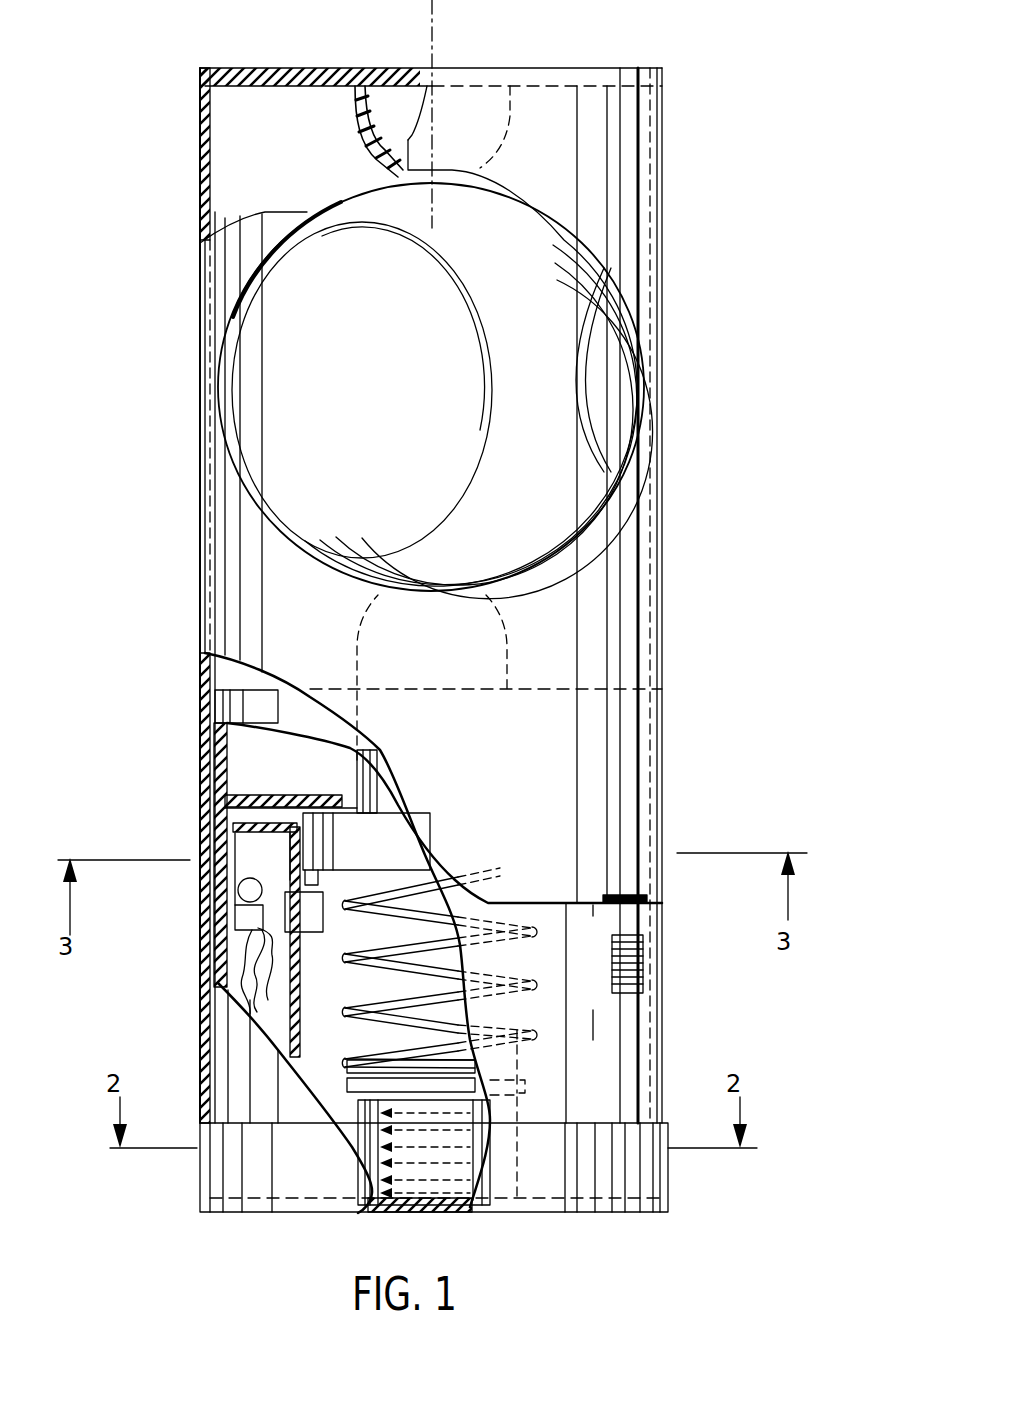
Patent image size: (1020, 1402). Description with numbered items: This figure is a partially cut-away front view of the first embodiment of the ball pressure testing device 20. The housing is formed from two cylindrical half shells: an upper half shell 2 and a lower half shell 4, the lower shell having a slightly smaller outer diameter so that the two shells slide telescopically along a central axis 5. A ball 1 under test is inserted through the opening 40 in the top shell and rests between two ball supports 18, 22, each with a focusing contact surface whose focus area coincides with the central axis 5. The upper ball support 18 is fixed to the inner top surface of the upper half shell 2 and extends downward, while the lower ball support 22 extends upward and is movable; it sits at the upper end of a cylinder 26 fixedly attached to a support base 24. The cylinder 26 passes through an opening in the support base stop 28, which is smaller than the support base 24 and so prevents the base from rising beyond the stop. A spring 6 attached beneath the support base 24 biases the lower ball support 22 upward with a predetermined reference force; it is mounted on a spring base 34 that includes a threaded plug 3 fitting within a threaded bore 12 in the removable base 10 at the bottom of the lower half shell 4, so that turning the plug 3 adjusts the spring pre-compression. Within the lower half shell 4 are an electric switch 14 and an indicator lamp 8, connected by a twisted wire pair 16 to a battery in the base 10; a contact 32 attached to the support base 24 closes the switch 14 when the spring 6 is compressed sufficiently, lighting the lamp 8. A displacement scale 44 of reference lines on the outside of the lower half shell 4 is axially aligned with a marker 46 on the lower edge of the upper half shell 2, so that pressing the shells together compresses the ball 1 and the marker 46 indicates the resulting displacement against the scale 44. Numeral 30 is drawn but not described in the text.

The ball 1 is at (608, 372).
The upper half shell 2 is at (630, 540).
The threaded plug 3 is at (442, 1192).
The lower half shell 4 is at (626, 1028).
The central axis 5 is at (437, 45).
The spring 6 is at (356, 1022).
The indicator lamp 8 is at (240, 891).
The removable base 10 is at (227, 1181).
The threaded bore 12 is at (370, 1190).
The electric switch 14 is at (304, 920).
The twisted wire pair 16 is at (238, 965).
The ball support 18 is at (375, 150).
The ball pressure testing device 20 is at (185, 289).
The ball support 22 is at (438, 583).
The support base 24 is at (382, 822).
The cylinder 26 is at (362, 772).
The support base stop 28 is at (272, 797).
The bracket strip 30 is at (214, 832).
The contact 32 is at (326, 868).
The spring base 34 is at (456, 1085).
The opening 40 is at (562, 212).
The displacement scale 44 is at (632, 958).
The marker 46 is at (618, 900).